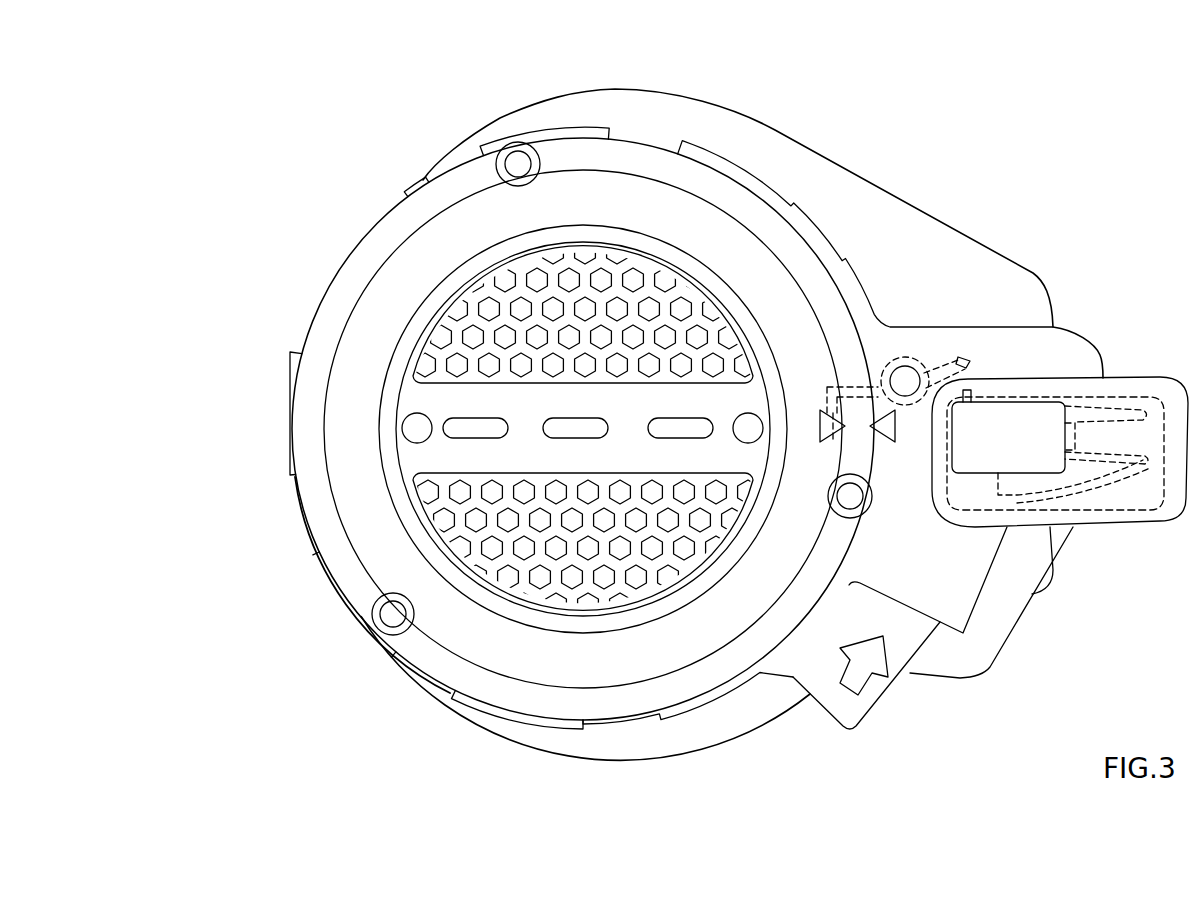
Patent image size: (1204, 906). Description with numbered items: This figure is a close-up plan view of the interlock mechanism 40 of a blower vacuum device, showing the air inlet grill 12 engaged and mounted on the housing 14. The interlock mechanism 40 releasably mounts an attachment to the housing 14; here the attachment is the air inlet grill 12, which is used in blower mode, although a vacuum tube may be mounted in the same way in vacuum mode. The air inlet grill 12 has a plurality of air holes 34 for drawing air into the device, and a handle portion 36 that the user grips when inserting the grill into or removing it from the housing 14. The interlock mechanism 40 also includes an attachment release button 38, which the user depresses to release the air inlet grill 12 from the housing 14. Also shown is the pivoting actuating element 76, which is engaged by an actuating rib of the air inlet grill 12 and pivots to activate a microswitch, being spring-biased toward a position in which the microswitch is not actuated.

The air inlet grill 12 is at (383, 518).
The housing 14 is at (460, 143).
The air holes 34 is at (653, 303).
The handle portion 36 is at (438, 407).
The attachment release button 38 is at (863, 700).
The interlock mechanism 40 is at (848, 238).
The pivoting actuating element 76 is at (960, 362).